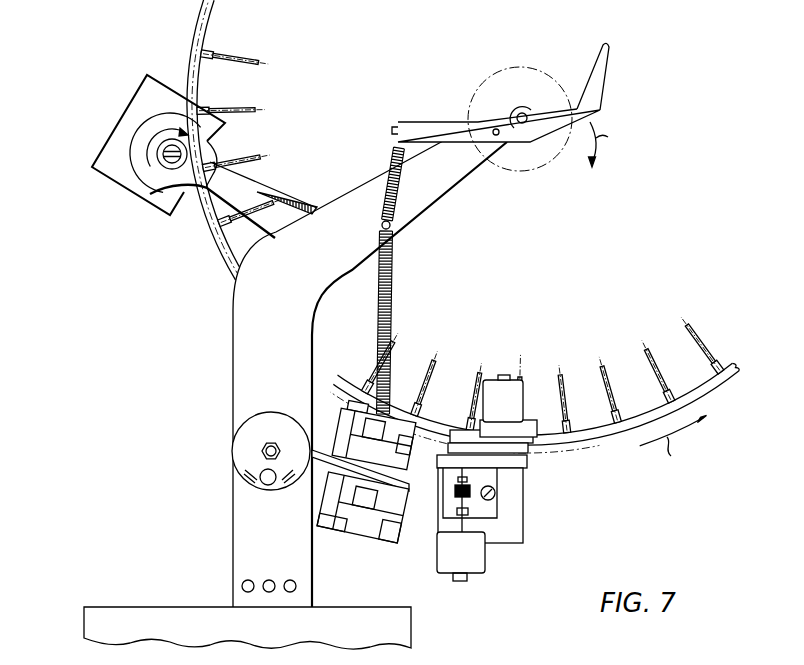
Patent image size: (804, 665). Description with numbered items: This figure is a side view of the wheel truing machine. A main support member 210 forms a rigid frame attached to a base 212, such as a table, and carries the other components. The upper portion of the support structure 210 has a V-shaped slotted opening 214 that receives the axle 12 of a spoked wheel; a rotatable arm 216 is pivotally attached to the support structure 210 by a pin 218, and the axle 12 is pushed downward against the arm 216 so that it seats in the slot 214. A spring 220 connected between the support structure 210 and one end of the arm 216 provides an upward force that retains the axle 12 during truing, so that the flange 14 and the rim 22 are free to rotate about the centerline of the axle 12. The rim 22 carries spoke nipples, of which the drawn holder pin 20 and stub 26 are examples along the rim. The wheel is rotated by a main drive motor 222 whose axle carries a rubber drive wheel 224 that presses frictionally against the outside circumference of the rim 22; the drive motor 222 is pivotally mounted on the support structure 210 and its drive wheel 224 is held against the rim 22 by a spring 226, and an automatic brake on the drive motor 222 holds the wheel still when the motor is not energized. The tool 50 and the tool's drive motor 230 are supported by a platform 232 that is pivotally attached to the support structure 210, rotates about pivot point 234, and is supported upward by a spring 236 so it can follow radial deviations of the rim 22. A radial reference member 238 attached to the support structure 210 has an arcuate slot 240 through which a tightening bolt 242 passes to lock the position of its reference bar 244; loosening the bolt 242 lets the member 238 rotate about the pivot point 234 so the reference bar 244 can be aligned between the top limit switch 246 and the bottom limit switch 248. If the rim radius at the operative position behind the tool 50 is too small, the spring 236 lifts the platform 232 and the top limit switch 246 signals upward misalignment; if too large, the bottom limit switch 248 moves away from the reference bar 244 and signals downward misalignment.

The axle 12 is at (527, 115).
The flange 14 is at (543, 167).
The holder pin 20 is at (260, 62).
The rim 22 is at (583, 447).
The holder stub 26 is at (216, 51).
The tool 50 is at (537, 420).
The main support member 210 is at (233, 336).
The base 212 is at (170, 606).
The slotted opening 214 is at (519, 113).
The rotatable arm 216 is at (610, 70).
The pin 218 is at (492, 130).
The spring 220 is at (403, 170).
The main drive motor 222 is at (122, 178).
The drive wheel 224 is at (167, 172).
The spring 226 is at (288, 193).
The drive motor 230 is at (522, 388).
The platform 232 is at (417, 502).
The pivot point 234 is at (269, 442).
The spring 236 is at (394, 287).
The radial reference member 238 is at (236, 449).
The arcuate slot 240 is at (250, 484).
The tightening bolt 242 is at (272, 487).
The reference bar 244 is at (330, 458).
The top limit switch 246 is at (414, 452).
The bottom limit switch 248 is at (372, 513).